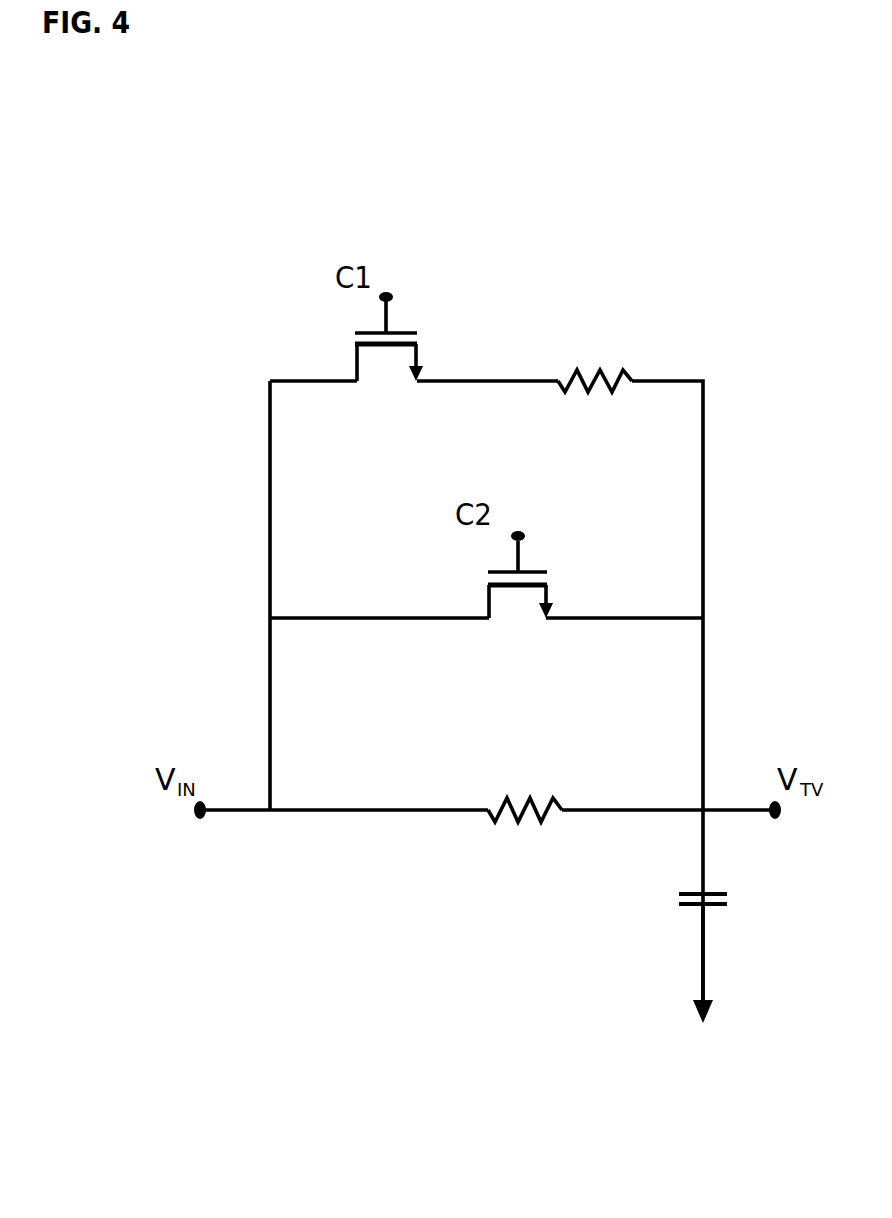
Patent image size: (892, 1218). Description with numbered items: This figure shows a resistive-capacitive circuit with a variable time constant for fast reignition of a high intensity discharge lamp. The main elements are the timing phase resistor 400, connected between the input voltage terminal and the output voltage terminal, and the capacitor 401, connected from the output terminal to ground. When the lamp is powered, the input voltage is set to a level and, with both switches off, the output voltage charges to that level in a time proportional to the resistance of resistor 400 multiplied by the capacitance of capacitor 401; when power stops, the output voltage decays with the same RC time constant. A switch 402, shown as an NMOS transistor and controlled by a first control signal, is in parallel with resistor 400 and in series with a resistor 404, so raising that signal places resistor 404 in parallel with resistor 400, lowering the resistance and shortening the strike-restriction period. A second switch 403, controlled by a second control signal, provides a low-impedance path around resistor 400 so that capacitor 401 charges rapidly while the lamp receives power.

The timing phase resistor 400 is at (505, 822).
The capacitor 401 is at (712, 905).
The switch 402 is at (405, 334).
The switch 403 is at (538, 573).
The resistor 404 is at (612, 368).